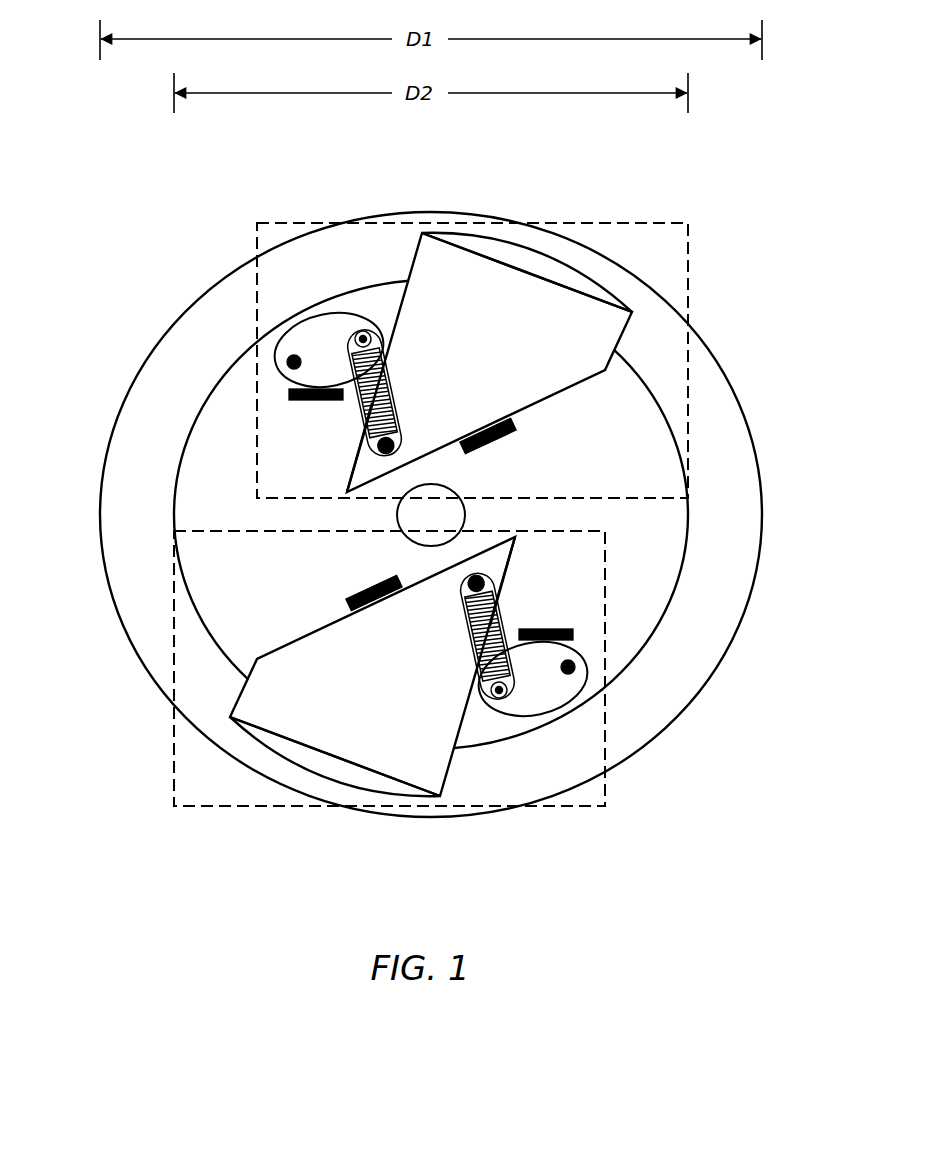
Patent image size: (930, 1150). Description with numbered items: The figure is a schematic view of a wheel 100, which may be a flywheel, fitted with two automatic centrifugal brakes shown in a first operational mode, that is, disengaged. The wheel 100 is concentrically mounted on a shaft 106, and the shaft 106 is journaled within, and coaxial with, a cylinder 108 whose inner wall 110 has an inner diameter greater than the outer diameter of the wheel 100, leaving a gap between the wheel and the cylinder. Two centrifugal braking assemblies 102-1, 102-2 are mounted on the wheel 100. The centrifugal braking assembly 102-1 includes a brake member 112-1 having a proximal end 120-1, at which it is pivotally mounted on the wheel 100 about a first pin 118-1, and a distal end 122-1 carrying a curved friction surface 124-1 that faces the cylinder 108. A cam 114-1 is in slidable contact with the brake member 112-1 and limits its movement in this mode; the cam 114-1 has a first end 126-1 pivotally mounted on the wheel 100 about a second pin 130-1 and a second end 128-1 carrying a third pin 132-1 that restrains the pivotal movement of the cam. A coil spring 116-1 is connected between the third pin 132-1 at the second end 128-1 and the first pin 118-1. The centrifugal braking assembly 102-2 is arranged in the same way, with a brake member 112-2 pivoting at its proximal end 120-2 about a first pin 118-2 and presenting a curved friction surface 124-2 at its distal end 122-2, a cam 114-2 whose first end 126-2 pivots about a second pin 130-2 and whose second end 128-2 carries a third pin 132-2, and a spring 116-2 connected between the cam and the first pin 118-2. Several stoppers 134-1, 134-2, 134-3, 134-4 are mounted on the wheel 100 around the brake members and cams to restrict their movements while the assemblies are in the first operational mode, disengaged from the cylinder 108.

The wheel 100 is at (467, 514).
The centrifugal braking assembly 102-1 is at (427, 323).
The centrifugal braking assembly 102-2 is at (435, 714).
The shaft 106 is at (466, 516).
The cylinder 108 is at (710, 350).
The inner wall 110 is at (718, 394).
The brake member 112-1 is at (400, 268).
The brake member 112-2 is at (460, 758).
The cam 114-1 is at (215, 291).
The cam 114-2 is at (650, 740).
The spring 116-1 is at (374, 393).
The spring 116-2 is at (487, 636).
The first pin 118-1 is at (385, 445).
The first pin 118-2 is at (476, 583).
The proximal end 120-1 is at (362, 475).
The proximal end 120-2 is at (517, 548).
The distal end 122-1 is at (488, 262).
The distal end 122-2 is at (363, 762).
The curved friction surface 124-1 is at (533, 263).
The curved friction surface 124-2 is at (313, 760).
The first end 126-1 is at (270, 373).
The first end 126-2 is at (595, 658).
The second end 128-1 is at (378, 298).
The second end 128-2 is at (486, 731).
The second pin 130-1 is at (294, 362).
The second pin 130-2 is at (569, 669).
The third pin 132-1 is at (363, 339).
The third pin 132-2 is at (499, 690).
The stopper 134-1 is at (288, 396).
The stopper 134-2 is at (498, 437).
The stopper 134-3 is at (574, 635).
The stopper 134-4 is at (352, 602).